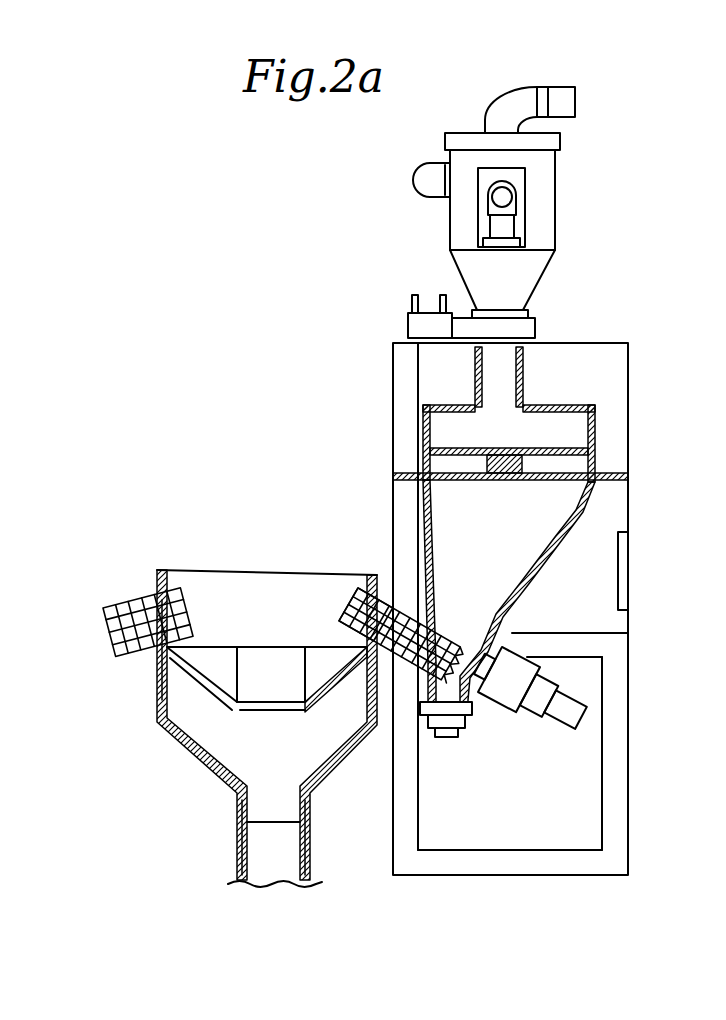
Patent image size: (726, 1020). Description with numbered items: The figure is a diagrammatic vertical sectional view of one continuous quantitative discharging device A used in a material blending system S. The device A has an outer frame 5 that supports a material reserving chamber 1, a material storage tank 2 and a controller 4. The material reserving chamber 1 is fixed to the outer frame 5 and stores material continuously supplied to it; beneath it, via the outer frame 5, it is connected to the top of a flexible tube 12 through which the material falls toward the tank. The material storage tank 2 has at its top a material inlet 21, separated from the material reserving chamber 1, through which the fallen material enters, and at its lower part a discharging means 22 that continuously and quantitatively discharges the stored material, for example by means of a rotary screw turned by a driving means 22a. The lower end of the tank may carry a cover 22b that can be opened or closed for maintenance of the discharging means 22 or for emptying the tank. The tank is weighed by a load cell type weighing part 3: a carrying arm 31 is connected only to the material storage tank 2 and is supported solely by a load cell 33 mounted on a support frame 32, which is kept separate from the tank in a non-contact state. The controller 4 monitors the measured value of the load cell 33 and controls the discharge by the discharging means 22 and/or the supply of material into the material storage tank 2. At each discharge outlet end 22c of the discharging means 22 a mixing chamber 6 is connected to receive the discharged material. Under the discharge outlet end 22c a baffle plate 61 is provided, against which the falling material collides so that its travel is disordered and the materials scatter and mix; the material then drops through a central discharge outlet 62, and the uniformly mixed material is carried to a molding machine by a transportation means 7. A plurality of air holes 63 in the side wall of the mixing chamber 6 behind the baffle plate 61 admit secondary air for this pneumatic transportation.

The material reserving chamber 1 is at (540, 197).
The flexible tube 12 is at (525, 376).
The material storage tank 2 is at (600, 430).
The material inlet 21 is at (560, 391).
The load cell type weighing part 3 is at (532, 490).
The carrying arm 31 is at (450, 448).
The support frame 32 is at (620, 481).
The load cell 33 is at (500, 462).
The controller 4 is at (629, 575).
The outer frame 5 is at (403, 365).
The mixing chamber 6 is at (212, 771).
The baffle plate 61 is at (160, 688).
The central discharge outlet 62 is at (263, 712).
The air holes 63 is at (357, 680).
The transportation means 7 is at (311, 852).
The discharging means 22 is at (402, 648).
The driving means 22a is at (556, 719).
The cover 22b is at (447, 738).
The discharge outlet end 22c is at (183, 592).
The material blending system S is at (277, 318).
The continuous quantitative discharging device A is at (603, 256).